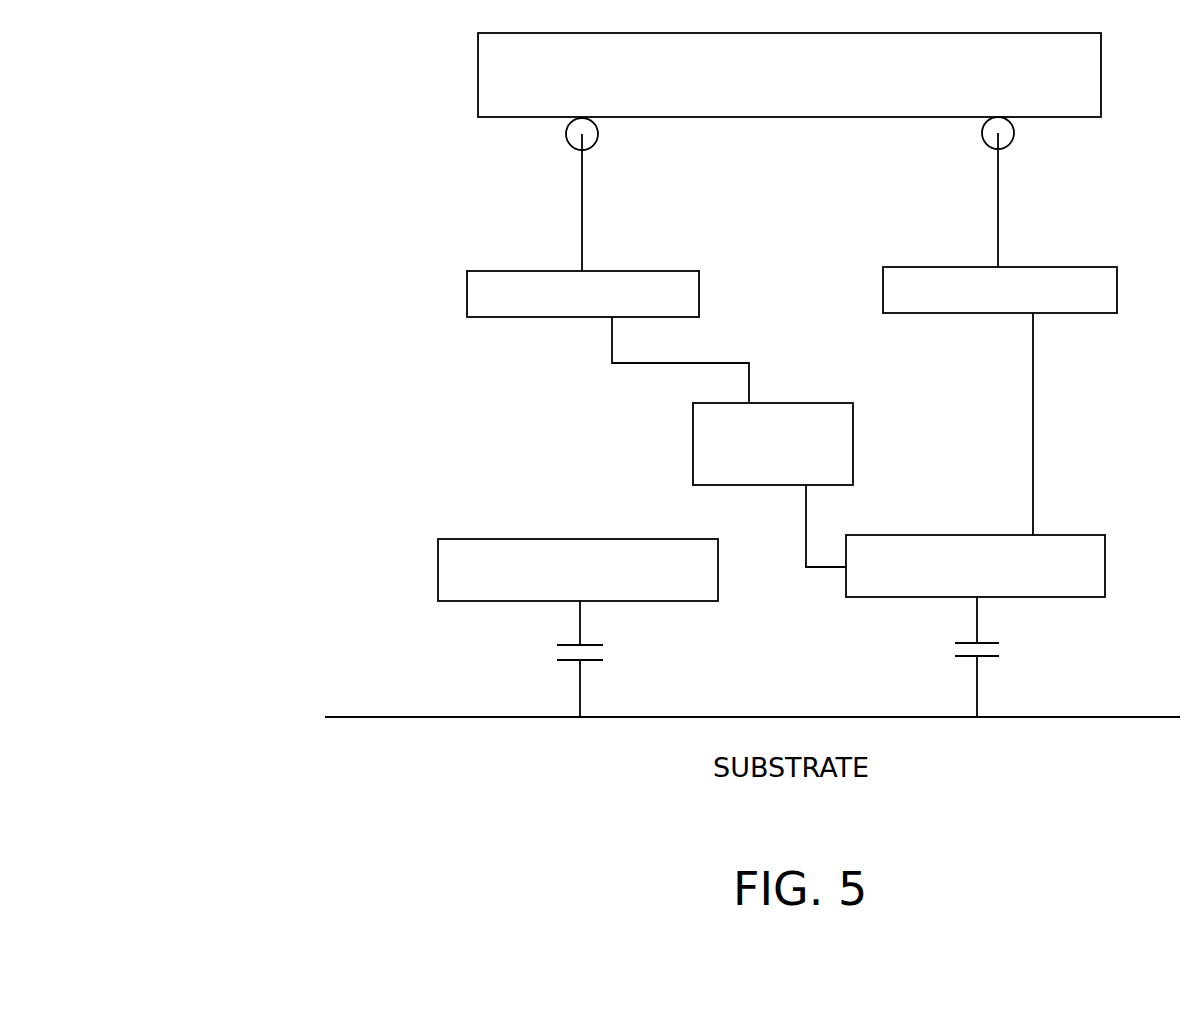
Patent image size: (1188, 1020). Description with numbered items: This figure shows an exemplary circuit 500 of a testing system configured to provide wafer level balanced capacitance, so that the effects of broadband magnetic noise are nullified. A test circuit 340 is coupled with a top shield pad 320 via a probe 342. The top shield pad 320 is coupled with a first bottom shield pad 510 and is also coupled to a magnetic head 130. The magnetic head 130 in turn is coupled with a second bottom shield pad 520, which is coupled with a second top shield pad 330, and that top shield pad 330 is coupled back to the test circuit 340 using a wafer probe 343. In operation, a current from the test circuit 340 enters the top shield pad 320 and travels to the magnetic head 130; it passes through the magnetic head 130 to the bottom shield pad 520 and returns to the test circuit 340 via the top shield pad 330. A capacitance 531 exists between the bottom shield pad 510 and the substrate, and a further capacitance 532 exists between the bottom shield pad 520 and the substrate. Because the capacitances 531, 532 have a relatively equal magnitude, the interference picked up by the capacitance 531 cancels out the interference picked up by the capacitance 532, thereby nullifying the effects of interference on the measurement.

The circuit 500 is at (345, 98).
The test circuit 340 is at (821, 92).
The probe 342 is at (582, 192).
The wafer probe 343 is at (998, 187).
The top shield pad 320 is at (661, 271).
The top shield pad 330 is at (1077, 267).
The magnetic head 130 is at (830, 403).
The first bottom shield pad 510 is at (558, 539).
The second bottom shield pad 520 is at (1053, 597).
The capacitance 531 is at (550, 656).
The capacitance 532 is at (952, 645).